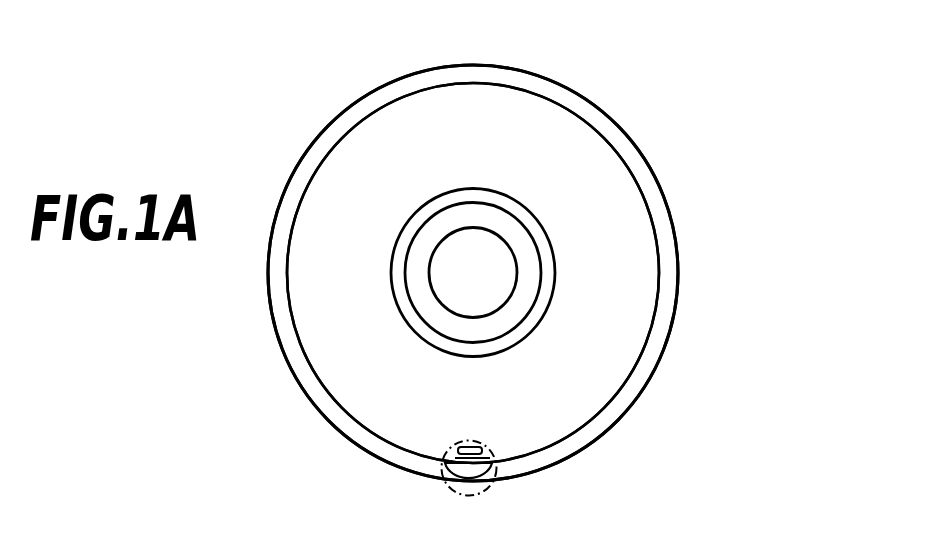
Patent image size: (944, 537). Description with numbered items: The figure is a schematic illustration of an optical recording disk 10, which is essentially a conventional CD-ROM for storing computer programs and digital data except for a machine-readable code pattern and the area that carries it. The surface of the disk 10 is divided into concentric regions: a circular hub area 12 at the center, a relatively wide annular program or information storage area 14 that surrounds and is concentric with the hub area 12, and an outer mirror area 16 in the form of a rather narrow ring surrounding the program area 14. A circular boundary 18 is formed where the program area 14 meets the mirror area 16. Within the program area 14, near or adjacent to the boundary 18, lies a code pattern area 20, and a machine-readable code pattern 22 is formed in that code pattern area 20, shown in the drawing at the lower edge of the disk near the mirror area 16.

The optical recording disk 10 is at (690, 92).
The circular hub area 12 is at (523, 206).
The annular program or information storage area 14 is at (595, 370).
The outer mirror area 16 is at (711, 267).
The circular boundary 18 is at (660, 246).
The code pattern area 20 is at (443, 484).
The machine-readable code pattern 22 is at (495, 462).